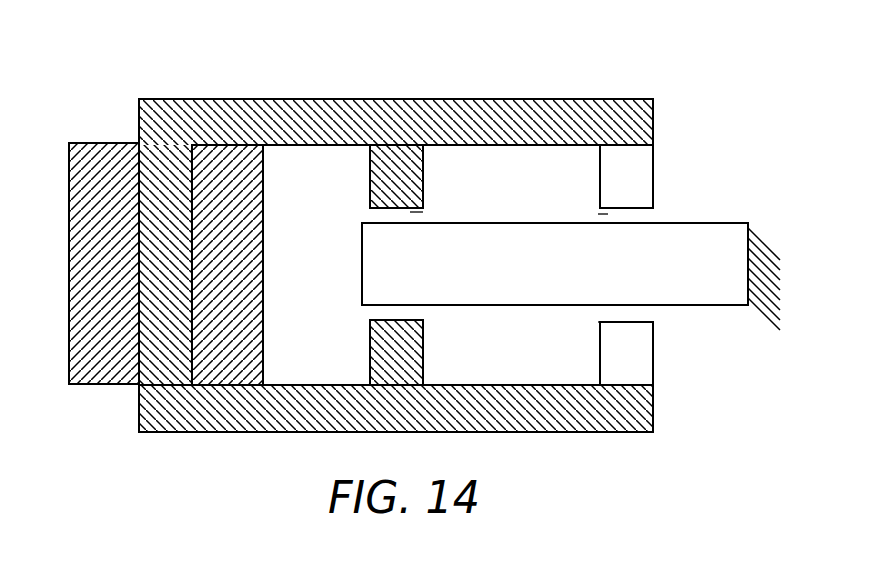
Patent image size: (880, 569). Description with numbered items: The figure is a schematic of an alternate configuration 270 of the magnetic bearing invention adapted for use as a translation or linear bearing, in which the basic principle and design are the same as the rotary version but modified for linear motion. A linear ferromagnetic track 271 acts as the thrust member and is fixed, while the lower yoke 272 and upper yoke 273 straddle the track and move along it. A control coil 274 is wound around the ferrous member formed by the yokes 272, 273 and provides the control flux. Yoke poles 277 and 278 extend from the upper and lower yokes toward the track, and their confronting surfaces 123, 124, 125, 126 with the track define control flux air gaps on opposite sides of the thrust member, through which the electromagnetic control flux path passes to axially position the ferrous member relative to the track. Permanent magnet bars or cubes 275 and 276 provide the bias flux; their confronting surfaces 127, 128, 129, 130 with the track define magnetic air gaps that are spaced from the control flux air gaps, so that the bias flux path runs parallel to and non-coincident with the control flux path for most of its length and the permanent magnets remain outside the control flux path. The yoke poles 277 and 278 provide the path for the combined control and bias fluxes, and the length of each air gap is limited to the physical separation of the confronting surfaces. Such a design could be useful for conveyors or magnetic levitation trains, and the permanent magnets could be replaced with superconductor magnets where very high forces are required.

The configuration 270 is at (109, 43).
The linear ferromagnetic track 271 is at (700, 225).
The lower yoke 272 is at (485, 433).
The upper yoke 273 is at (487, 99).
The control coil 274 is at (106, 142).
The permanent magnet bar 275 is at (656, 179).
The permanent magnet bar 276 is at (656, 356).
The yoke pole 277 is at (370, 189).
The yoke pole 278 is at (370, 358).
The confronting surface 123 is at (414, 213).
The confronting surface 124 is at (443, 224).
The confronting surface 125 is at (404, 320).
The confronting surface 126 is at (364, 306).
The confronting surface 127 is at (604, 212).
The confronting surface 128 is at (622, 222).
The confronting surface 129 is at (598, 320).
The confronting surface 130 is at (616, 308).